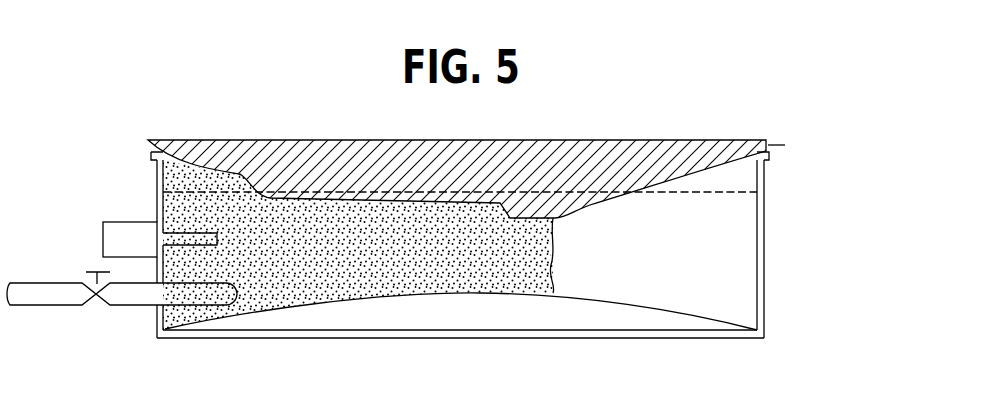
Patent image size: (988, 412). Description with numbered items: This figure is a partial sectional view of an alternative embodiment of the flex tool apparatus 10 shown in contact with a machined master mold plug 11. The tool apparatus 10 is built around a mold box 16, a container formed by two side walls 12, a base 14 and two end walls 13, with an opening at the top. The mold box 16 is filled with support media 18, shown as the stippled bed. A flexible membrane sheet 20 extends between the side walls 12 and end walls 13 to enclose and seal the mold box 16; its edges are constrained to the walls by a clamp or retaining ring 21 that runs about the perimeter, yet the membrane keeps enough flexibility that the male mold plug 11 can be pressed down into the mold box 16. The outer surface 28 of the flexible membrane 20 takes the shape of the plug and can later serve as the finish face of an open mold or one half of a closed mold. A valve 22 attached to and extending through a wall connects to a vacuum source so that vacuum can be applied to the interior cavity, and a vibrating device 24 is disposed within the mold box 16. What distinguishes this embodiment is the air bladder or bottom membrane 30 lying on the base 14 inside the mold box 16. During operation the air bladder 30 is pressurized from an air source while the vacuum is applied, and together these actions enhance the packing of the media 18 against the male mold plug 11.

The tool apparatus 10 is at (826, 101).
The master mold plug 11 is at (641, 140).
The side walls 12 is at (157, 180).
The end walls 13 is at (648, 253).
The base 14 is at (585, 338).
The mold box 16 is at (765, 335).
The support media 18 is at (282, 260).
The flexible membrane sheet 20 is at (705, 197).
The retaining ring 21 is at (152, 152).
The valve 22 is at (98, 300).
The vibrating device 24 is at (103, 226).
The outer surface 28 is at (262, 152).
The air bladder 30 is at (418, 317).